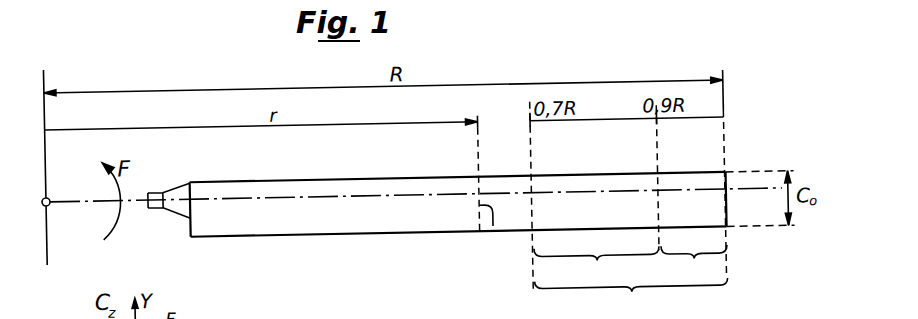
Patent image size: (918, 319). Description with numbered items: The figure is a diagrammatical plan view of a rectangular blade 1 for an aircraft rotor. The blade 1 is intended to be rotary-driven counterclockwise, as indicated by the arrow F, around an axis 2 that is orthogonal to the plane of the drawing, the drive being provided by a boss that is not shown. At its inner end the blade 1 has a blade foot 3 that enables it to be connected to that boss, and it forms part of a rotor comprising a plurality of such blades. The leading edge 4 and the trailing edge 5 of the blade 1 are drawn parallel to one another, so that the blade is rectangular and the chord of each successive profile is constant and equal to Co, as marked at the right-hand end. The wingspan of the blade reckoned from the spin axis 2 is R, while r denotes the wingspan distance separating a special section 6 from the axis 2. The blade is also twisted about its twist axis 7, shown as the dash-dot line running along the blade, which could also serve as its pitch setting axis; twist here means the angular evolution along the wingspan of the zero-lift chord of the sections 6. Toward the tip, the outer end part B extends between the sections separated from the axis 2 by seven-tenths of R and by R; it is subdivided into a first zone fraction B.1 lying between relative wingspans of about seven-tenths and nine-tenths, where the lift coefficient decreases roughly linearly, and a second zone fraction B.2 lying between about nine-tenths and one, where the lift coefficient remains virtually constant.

The blade 1 is at (458, 220).
The axis 2 is at (43, 202).
The blade foot 3 is at (184, 218).
The leading edge 4 is at (318, 185).
The trailing edge 5 is at (344, 242).
The special section 6 is at (492, 234).
The twist axis 7 is at (272, 214).
The first zone fraction B.1 is at (604, 269).
The second zone fraction B.2 is at (694, 270).
The outer end part B is at (628, 306).